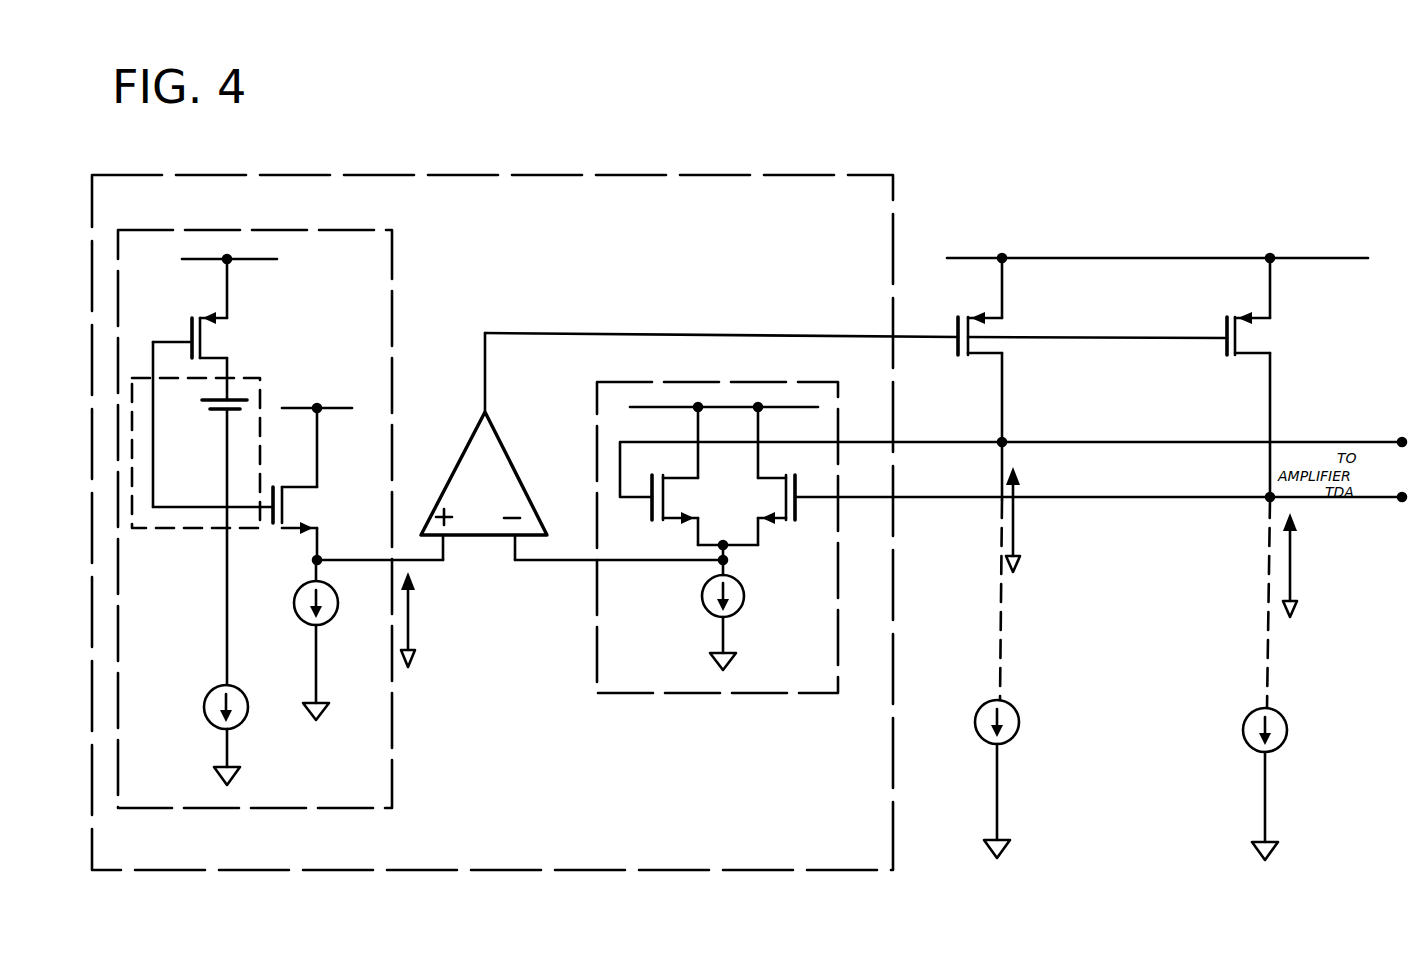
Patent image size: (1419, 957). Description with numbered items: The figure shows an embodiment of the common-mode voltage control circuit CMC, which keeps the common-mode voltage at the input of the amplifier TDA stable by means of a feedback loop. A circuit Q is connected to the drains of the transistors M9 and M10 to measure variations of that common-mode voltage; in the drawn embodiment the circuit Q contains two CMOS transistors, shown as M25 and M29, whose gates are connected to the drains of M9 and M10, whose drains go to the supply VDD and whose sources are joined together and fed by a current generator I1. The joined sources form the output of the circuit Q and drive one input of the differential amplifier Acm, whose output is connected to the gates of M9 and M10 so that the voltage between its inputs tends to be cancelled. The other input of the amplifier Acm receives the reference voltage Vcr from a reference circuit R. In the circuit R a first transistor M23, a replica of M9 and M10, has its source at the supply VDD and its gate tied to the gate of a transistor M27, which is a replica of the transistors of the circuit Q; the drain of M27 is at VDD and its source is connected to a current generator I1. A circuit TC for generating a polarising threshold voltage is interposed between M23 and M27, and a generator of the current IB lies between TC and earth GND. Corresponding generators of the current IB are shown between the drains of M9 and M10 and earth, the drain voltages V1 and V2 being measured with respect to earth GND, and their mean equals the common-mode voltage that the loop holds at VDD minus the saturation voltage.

The common-mode voltage control circuit CMC is at (520, 173).
The reference circuit R is at (392, 288).
The polarising voltage generating circuit TC is at (262, 415).
The measuring circuit Q is at (640, 383).
The differential amplifier Acm is at (500, 475).
The first transistor M23 is at (212, 358).
The transistor M27 is at (296, 490).
The transistor M25 is at (680, 480).
The CMOS transistor M29 is at (772, 478).
The transistor M9 is at (975, 355).
The transistor M10 is at (1247, 355).
The current generator I1 is at (775, 620).
The current generator IB is at (244, 722).
The supply voltage VDD is at (270, 259).
The reference voltage Vcr is at (410, 627).
The drain voltage of M9 V1 is at (1013, 515).
The drain voltage of M10 V2 is at (1290, 560).
The earth GND is at (1000, 848).